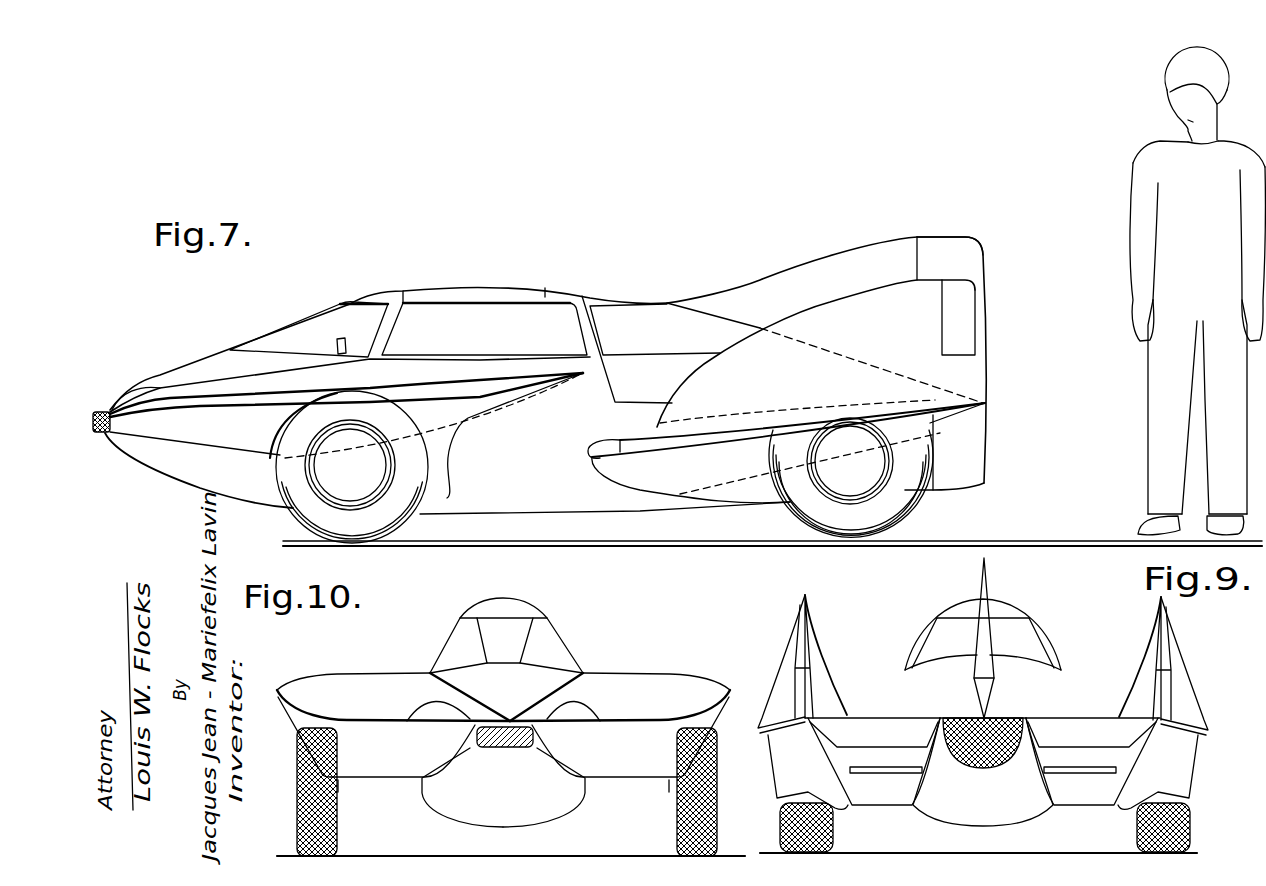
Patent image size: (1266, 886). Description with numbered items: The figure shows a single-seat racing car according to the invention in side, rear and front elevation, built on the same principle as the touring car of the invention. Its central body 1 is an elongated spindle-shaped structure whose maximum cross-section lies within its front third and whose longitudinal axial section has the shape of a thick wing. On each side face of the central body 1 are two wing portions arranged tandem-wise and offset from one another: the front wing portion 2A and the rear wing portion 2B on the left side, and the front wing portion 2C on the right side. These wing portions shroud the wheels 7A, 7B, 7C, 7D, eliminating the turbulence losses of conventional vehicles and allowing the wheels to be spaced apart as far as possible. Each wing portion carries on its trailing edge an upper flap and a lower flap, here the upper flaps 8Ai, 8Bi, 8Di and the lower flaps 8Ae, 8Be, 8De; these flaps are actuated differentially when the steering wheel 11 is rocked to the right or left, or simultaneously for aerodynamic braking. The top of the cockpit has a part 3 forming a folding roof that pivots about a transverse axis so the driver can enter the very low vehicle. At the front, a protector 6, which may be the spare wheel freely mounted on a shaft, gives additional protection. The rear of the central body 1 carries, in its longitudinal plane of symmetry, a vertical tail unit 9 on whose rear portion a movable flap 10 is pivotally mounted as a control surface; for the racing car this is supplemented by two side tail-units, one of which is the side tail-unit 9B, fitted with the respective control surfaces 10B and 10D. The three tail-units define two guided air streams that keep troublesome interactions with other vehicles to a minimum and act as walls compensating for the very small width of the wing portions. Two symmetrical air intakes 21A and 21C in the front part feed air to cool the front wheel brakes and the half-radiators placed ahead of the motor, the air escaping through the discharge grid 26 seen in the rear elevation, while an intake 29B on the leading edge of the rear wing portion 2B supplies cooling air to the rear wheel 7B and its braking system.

In FIG. 7, the central body 1 is at (613, 296).
In FIG. 10, the central body 1 is at (537, 613).
In FIG. 9, the central body 1 is at (1010, 612).
In FIG. 7, the front wing portion 2A is at (195, 444).
In FIG. 10, the front wing portion 2A is at (697, 690).
In FIG. 7, the rear wing portion 2B is at (623, 469).
In FIG. 10, the front wing portion 2C is at (317, 688).
In FIG. 7, the folding roof part 3 is at (483, 294).
In FIG. 7, the protector 6 is at (97, 411).
In FIG. 10, the protector 6 is at (513, 748).
In FIG. 7, the front wheel 7A is at (303, 510).
In FIG. 10, the front wheel 7A is at (677, 820).
In FIG. 7, the rear wheel 7B is at (913, 518).
In FIG. 9, the rear wheel 7B is at (833, 831).
In FIG. 10, the wheel 7C is at (295, 803).
In FIG. 9, the wheel 7D is at (1190, 812).
In FIG. 7, the upper flap 8Ai is at (523, 365).
In FIG. 7, the lower flap 8Ae is at (525, 400).
In FIG. 7, the upper flap 8Bi is at (953, 402).
In FIG. 9, the upper flap 8Bi is at (864, 732).
In FIG. 7, the lower flap 8Be is at (960, 417).
In FIG. 9, the lower flap 8Be is at (877, 757).
In FIG. 9, the upper flap 8Di is at (1082, 732).
In FIG. 9, the lower flap 8De is at (1087, 757).
In FIG. 7, the vertical tail unit 9 is at (893, 260).
In FIG. 7, the side tail-unit 9B is at (800, 320).
In FIG. 7, the movable flap 10 is at (967, 258).
In FIG. 9, the movable flap 10 is at (986, 568).
In FIG. 7, the control surface 10B is at (963, 313).
In FIG. 9, the control surface 10B is at (808, 618).
In FIG. 9, the control surface 10D is at (1163, 640).
In FIG. 7, the steering wheel 11 is at (342, 340).
In FIG. 7, the air intake 21A is at (140, 396).
In FIG. 10, the air intake 21A is at (580, 712).
In FIG. 10, the air intake 21C is at (433, 715).
In FIG. 9, the rear outlet 26 is at (995, 755).
In FIG. 7, the intake 29B is at (600, 447).